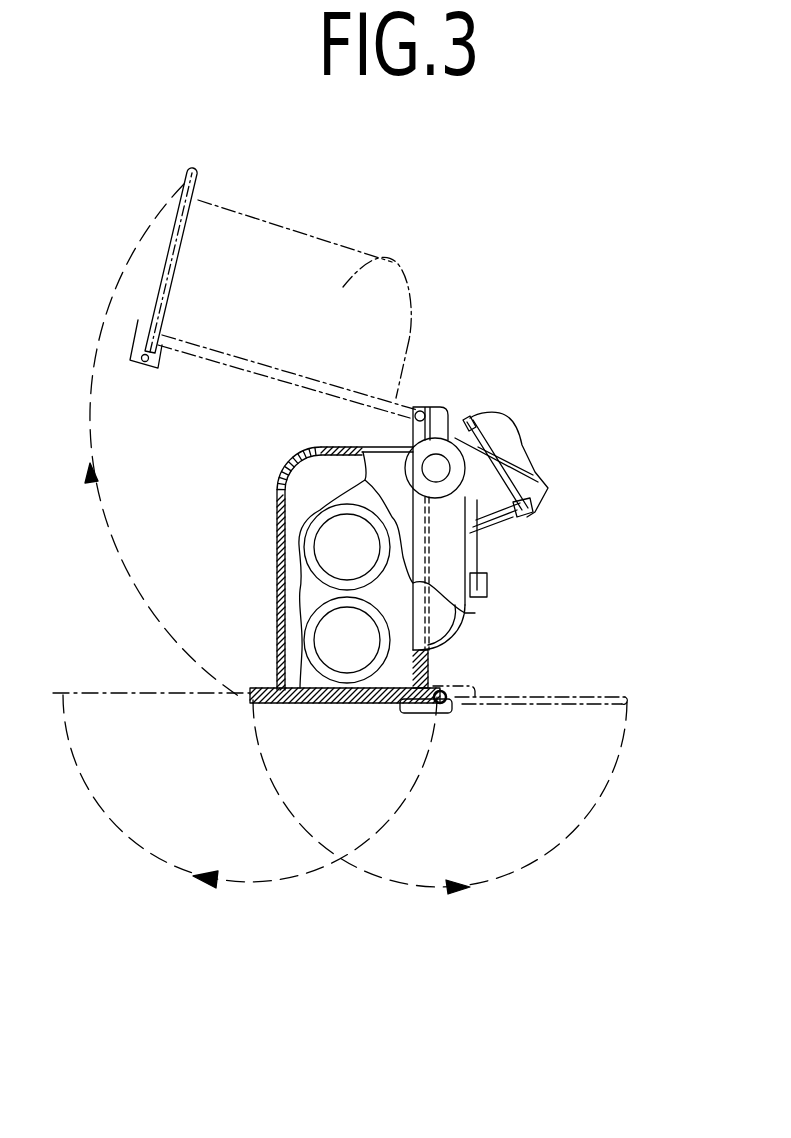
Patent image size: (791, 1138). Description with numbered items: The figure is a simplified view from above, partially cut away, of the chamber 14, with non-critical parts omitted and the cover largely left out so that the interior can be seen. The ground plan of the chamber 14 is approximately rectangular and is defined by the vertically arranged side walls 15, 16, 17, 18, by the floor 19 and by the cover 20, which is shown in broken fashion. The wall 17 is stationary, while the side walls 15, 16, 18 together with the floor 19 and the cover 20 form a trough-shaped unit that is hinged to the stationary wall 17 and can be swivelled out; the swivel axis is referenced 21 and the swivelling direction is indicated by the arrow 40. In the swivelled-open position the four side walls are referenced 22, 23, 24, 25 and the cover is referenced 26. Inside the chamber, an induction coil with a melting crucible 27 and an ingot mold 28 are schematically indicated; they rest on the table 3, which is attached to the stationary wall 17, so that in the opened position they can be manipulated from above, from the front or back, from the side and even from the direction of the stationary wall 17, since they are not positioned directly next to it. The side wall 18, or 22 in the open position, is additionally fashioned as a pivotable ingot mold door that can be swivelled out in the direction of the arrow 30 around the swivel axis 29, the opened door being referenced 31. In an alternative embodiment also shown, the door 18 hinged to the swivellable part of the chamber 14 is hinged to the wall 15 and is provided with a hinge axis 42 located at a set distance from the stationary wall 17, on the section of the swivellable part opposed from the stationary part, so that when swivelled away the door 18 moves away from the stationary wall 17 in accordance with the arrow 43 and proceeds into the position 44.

The table 3 is at (413, 677).
The chamber 14 is at (250, 550).
The side wall 15 is at (280, 597).
The side wall 16 is at (333, 447).
The stationary wall 17 is at (472, 558).
The side wall 18 is at (342, 703).
The floor 19 is at (320, 473).
The cover 20 is at (383, 463).
The swivel axis 21 is at (423, 407).
The side wall 22 is at (170, 253).
The side wall 23 is at (298, 225).
The side wall 24 is at (410, 343).
The side wall 25 is at (243, 368).
The cover 26 is at (373, 263).
The induction coil with melting crucible 27 is at (323, 550).
The ingot mold 28 is at (327, 640).
The swivel axis 29 is at (448, 705).
The arrow 30 is at (456, 896).
The door 31 is at (590, 697).
The arrow 40 is at (90, 478).
The hinge axis 42 is at (245, 698).
The arrow 43 is at (203, 886).
The position 44 is at (147, 692).